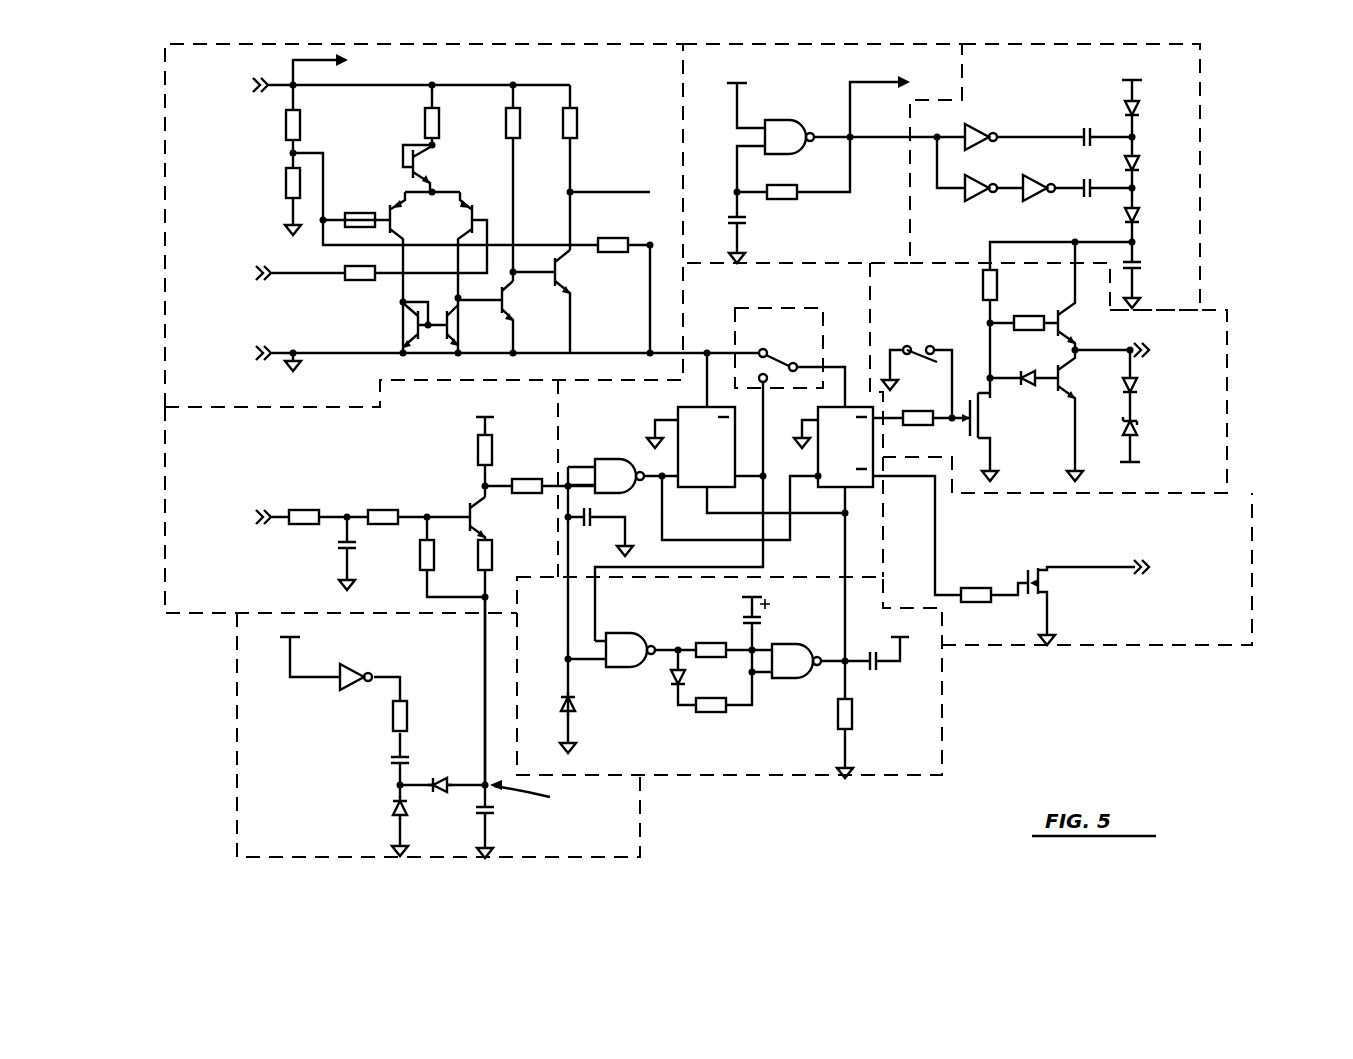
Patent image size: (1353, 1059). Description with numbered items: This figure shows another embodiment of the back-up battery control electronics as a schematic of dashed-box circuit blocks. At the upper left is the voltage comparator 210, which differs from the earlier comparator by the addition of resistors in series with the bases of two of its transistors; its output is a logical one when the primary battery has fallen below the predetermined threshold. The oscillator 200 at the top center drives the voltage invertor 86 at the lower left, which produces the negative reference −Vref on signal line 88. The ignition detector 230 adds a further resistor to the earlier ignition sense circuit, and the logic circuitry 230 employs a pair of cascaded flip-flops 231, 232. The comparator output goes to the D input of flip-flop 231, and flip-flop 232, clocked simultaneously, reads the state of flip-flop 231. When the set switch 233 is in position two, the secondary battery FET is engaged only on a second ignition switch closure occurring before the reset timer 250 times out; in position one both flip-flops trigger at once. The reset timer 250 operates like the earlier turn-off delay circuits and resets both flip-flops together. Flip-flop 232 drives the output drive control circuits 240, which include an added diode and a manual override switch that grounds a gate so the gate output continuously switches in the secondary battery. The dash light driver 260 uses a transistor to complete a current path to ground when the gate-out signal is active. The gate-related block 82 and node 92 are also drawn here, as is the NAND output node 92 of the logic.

The pulse shaping inverter and diode network 82 is at (1055, 70).
The voltage invertor 86 is at (237, 808).
The signal line 88 is at (485, 738).
The NAND gate output node 92 is at (624, 490).
The oscillator 200 is at (868, 248).
The voltage comparator 210 is at (165, 394).
The ignition detector 230 is at (165, 487).
The flip-flop 231 is at (680, 407).
The flip-flop 232 is at (812, 394).
The set switch 233 is at (815, 325).
The output drive control circuits 240 is at (1227, 443).
The reset timer 250 is at (942, 682).
The dash light driver 260 is at (1097, 645).